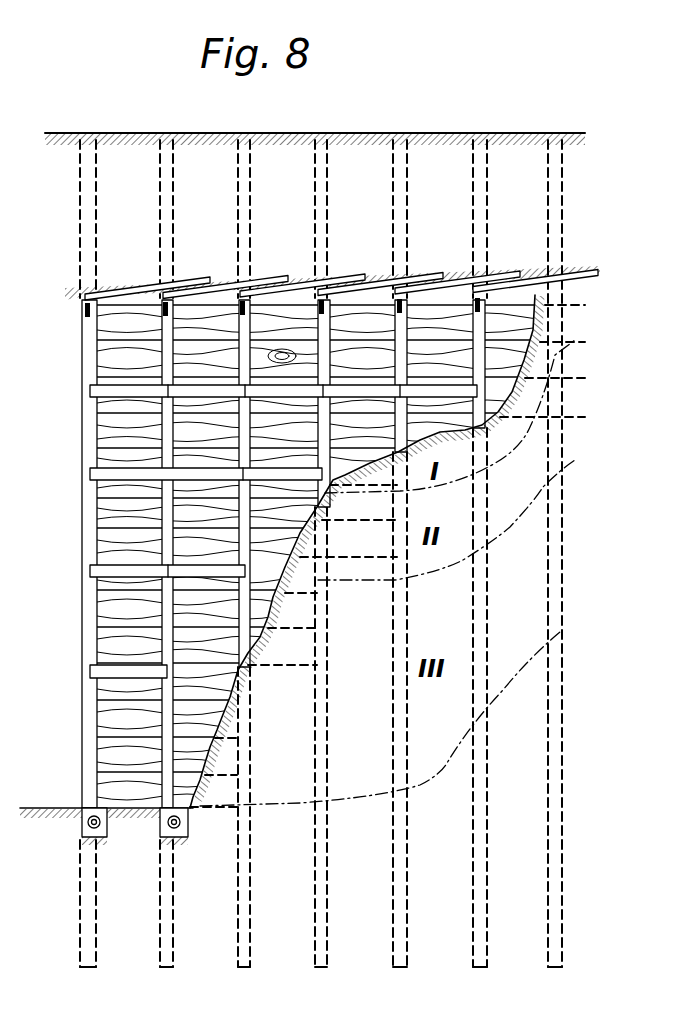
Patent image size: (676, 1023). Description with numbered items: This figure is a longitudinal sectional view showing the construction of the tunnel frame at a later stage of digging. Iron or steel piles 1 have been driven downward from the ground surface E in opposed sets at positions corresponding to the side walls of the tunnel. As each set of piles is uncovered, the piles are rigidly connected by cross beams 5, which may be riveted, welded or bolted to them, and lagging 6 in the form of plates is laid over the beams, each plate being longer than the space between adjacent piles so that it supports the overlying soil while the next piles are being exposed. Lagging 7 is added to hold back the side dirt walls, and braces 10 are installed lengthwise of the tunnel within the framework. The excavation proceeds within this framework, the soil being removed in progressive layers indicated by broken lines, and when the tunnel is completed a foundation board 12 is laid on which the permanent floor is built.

The piles 1 is at (245, 247).
The cross beams 5 is at (88, 312).
The lagging 6 is at (272, 277).
The lagging 7 is at (105, 440).
The braces 10 is at (92, 563).
The foundation board 12 is at (155, 832).
The ground surface E is at (347, 140).